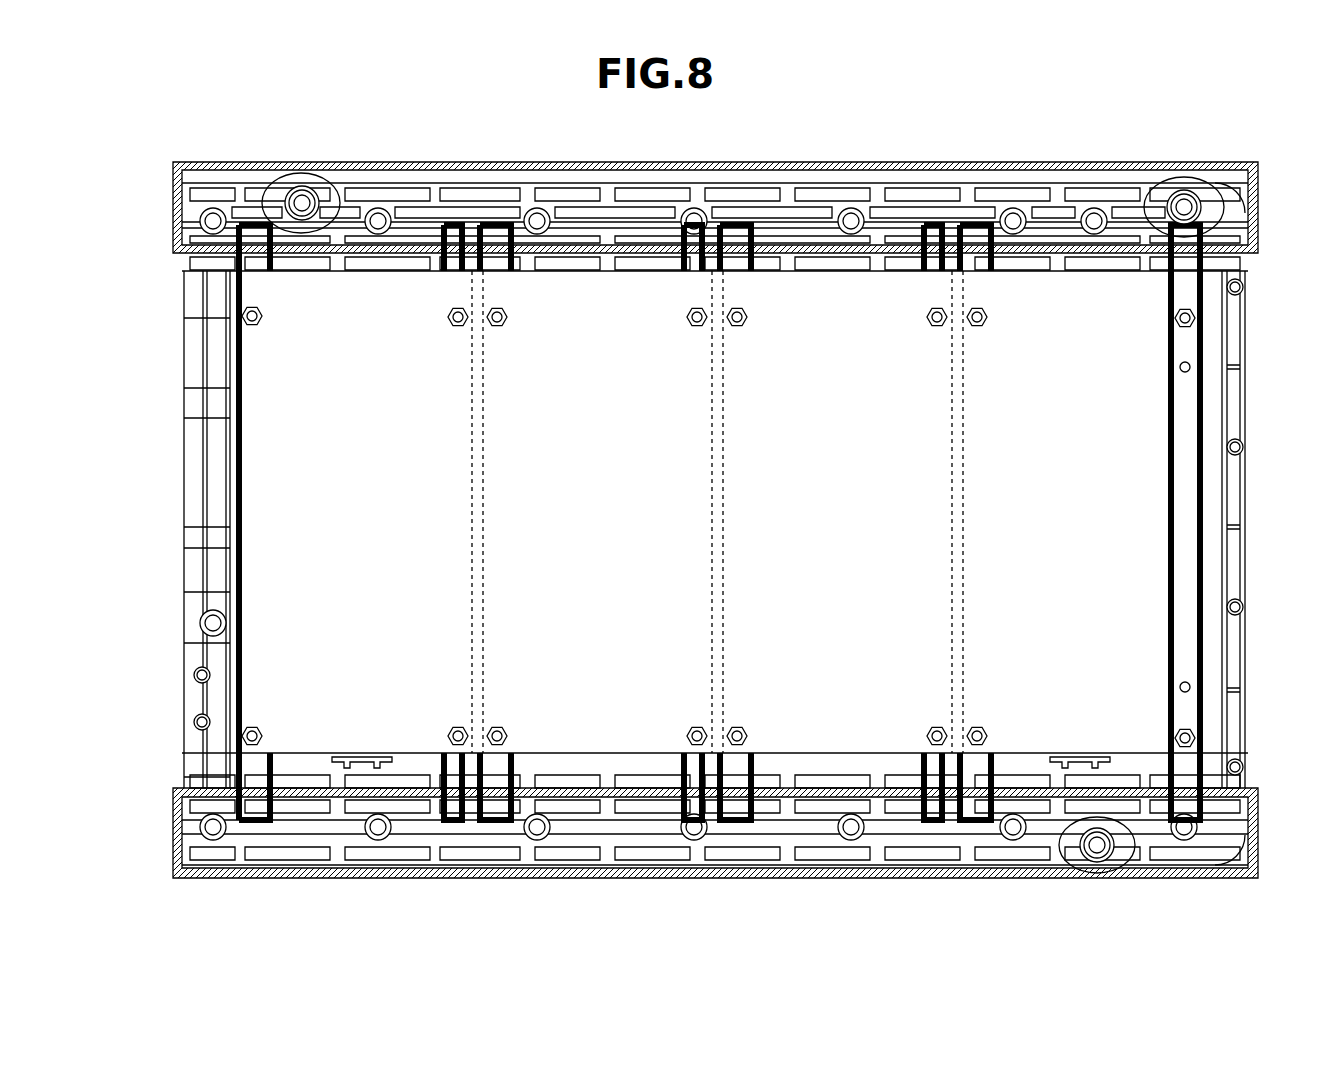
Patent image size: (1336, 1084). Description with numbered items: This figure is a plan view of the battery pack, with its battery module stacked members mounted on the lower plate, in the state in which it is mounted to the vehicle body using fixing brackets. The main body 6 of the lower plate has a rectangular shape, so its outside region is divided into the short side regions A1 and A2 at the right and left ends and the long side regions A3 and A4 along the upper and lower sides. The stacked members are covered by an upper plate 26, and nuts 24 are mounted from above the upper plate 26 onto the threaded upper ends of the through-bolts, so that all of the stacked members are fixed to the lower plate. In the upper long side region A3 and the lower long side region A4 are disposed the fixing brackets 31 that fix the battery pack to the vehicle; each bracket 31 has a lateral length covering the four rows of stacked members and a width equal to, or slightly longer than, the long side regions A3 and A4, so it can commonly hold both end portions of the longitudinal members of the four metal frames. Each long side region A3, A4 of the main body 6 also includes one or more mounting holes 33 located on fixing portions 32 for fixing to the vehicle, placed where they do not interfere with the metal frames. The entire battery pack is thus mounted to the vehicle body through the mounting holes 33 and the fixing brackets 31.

The main body 6 is at (714, 517).
The nut 24 is at (258, 325).
The upper plate 26 is at (1127, 557).
The fixing bracket 31 is at (1028, 170).
The fixing portion 32 is at (1062, 862).
The mounting hole 33 is at (287, 126).
The short side region A1 is at (1210, 408).
The short side region A2 is at (185, 476).
The long side region A3 is at (872, 190).
The long side region A4 is at (803, 850).